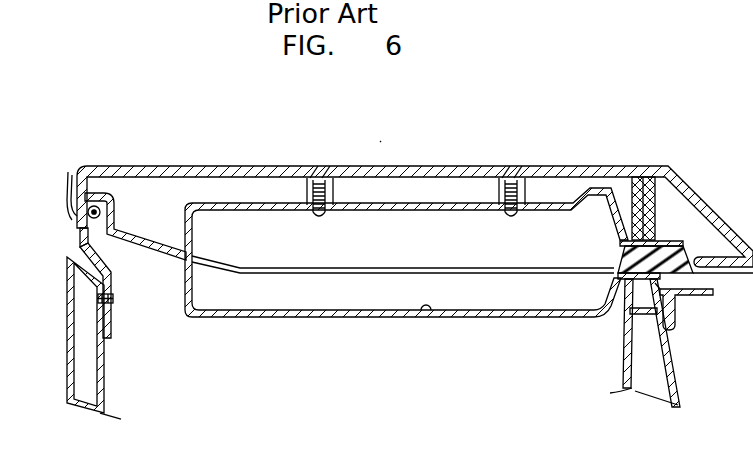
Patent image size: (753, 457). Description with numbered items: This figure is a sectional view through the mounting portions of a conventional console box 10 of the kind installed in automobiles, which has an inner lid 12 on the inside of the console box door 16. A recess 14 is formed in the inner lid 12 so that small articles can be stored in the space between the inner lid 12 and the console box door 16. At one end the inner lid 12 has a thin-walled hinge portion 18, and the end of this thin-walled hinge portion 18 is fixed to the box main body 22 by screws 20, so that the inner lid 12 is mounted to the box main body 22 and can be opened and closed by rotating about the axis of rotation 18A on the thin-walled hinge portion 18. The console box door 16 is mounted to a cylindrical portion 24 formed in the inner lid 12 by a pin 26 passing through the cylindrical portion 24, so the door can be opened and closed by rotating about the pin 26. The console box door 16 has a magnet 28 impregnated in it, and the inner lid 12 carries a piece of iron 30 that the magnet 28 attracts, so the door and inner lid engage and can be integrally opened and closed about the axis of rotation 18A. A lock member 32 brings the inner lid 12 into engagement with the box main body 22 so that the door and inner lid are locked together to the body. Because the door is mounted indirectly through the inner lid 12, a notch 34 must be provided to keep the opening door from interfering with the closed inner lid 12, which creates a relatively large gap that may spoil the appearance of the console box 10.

The console box 10 is at (392, 136).
The inner lid 12 is at (343, 317).
The recess 14 is at (430, 312).
The console box door 16 is at (270, 165).
The thin-walled hinge portion 18 is at (104, 264).
The axis of rotation 18A is at (82, 238).
The screws 20 is at (110, 297).
The box main body 22 is at (104, 362).
The cylindrical portion 24 is at (104, 213).
The pin 26 is at (88, 214).
The magnet 28 is at (641, 200).
The piece of iron 30 is at (625, 252).
The lock member 32 is at (702, 297).
The notch 34 is at (73, 175).